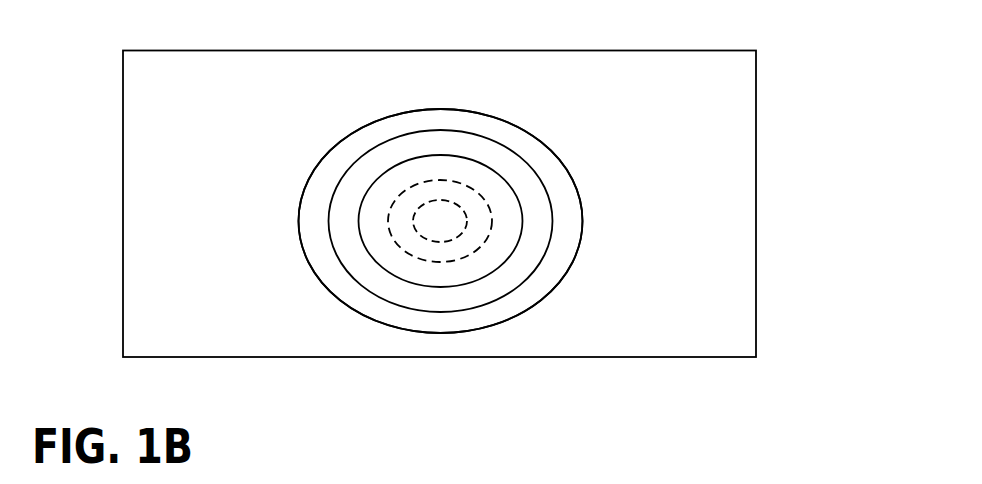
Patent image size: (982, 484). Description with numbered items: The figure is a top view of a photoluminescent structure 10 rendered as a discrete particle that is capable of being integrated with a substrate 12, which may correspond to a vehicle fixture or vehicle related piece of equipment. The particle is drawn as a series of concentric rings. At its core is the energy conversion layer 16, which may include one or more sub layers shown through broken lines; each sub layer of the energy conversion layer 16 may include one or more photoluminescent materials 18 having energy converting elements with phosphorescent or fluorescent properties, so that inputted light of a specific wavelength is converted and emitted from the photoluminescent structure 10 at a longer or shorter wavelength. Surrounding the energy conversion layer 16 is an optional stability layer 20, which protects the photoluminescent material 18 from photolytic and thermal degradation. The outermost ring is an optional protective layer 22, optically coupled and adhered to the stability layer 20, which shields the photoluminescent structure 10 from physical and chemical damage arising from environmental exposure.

The photoluminescent structure 10 is at (345, 117).
The substrate 12 is at (757, 155).
The energy conversion layer 16 is at (497, 268).
The photoluminescent material 18 is at (423, 238).
The stability layer 20 is at (507, 148).
The protective layer 22 is at (480, 112).